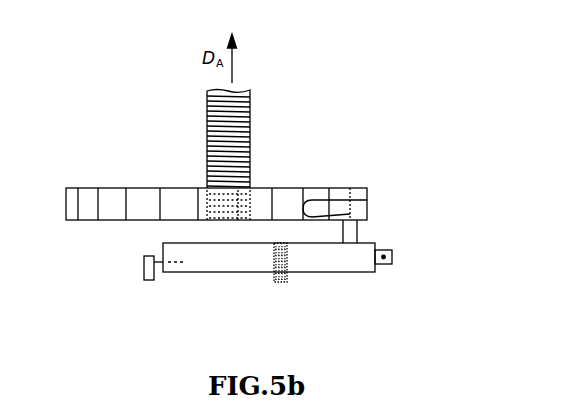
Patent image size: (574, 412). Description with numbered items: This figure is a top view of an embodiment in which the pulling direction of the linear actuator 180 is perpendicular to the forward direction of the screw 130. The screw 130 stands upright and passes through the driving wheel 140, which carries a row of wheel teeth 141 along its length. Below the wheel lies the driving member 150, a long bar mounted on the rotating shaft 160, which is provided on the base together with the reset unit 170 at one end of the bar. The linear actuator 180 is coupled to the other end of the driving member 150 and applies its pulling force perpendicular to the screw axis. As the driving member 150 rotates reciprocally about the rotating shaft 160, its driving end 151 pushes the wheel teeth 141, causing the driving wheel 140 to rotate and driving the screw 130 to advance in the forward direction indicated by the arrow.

The screw 130 is at (250, 110).
The driving wheel 140 is at (106, 188).
The wheel teeth 141 is at (155, 198).
The driving member 150 is at (343, 264).
The driving end 151 is at (312, 208).
The rotating shaft 160 is at (283, 284).
The reset unit 170 is at (150, 282).
The linear actuator 180 is at (394, 257).